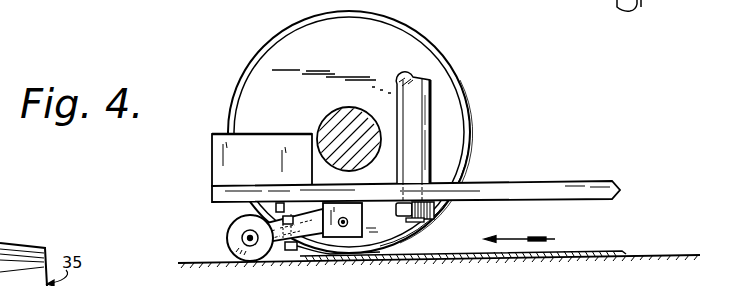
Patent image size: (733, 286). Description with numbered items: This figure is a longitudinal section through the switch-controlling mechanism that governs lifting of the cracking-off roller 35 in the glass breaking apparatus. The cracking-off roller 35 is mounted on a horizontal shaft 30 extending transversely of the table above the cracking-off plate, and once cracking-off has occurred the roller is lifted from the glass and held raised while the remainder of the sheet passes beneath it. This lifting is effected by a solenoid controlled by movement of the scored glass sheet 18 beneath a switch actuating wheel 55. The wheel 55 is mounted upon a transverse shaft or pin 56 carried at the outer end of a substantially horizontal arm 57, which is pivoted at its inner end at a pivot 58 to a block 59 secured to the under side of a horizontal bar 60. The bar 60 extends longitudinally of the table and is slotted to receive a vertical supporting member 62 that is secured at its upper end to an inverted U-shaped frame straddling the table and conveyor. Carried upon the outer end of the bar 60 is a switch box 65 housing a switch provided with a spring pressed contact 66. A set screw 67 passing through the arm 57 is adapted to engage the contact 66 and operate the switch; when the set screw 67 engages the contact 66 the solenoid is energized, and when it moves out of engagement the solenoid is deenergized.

The scored sheet of glass 18 is at (612, 250).
The horizontal shaft 30 is at (347, 114).
The cracking-off roller 35 is at (389, 48).
The switch actuating wheel 55 is at (233, 230).
The transverse shaft or pin 56 is at (242, 239).
The horizontal arm 57 is at (293, 249).
The pivot 58 is at (347, 222).
The block 59 is at (350, 238).
The horizontal bar 60 is at (522, 190).
The vertical supporting member 62 is at (417, 135).
The switch box 65 is at (220, 165).
The spring pressed contact 66 is at (277, 206).
The set screw 67 is at (291, 220).